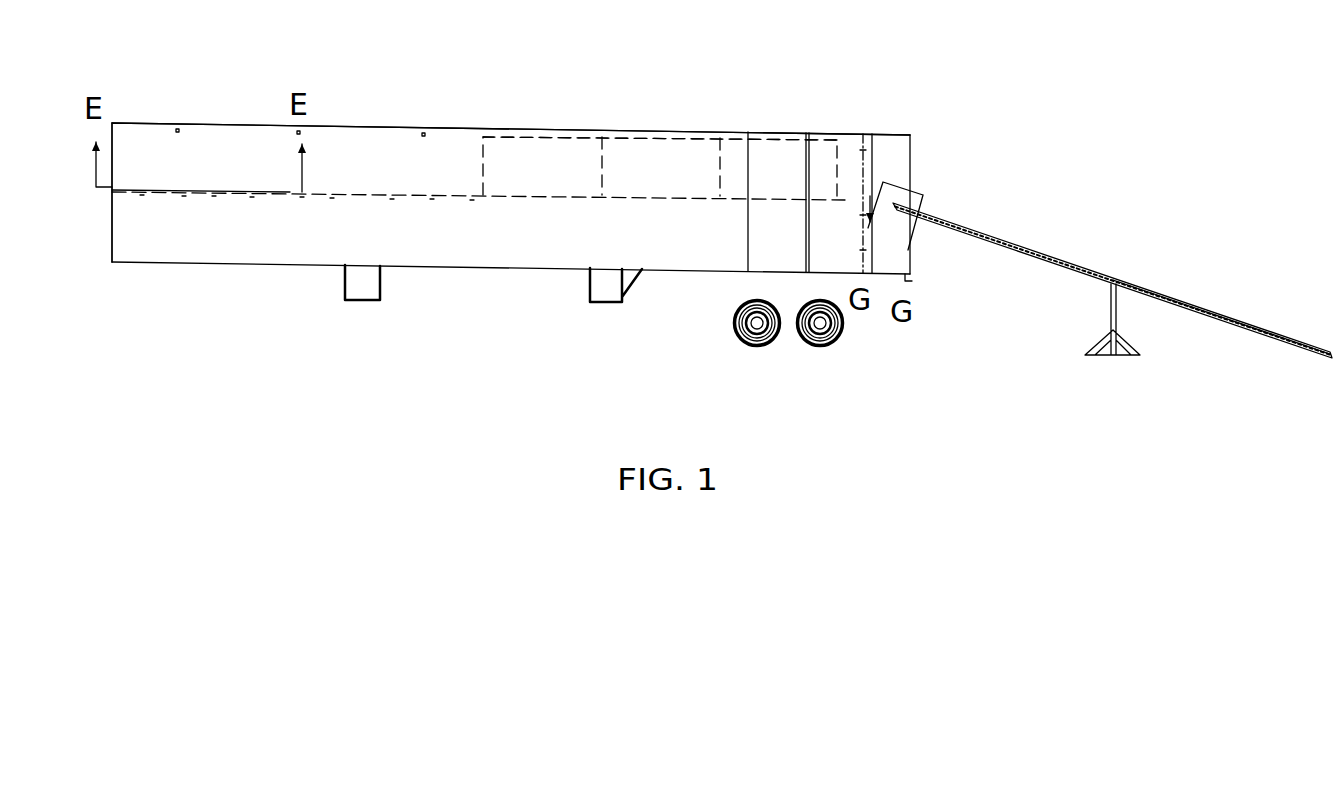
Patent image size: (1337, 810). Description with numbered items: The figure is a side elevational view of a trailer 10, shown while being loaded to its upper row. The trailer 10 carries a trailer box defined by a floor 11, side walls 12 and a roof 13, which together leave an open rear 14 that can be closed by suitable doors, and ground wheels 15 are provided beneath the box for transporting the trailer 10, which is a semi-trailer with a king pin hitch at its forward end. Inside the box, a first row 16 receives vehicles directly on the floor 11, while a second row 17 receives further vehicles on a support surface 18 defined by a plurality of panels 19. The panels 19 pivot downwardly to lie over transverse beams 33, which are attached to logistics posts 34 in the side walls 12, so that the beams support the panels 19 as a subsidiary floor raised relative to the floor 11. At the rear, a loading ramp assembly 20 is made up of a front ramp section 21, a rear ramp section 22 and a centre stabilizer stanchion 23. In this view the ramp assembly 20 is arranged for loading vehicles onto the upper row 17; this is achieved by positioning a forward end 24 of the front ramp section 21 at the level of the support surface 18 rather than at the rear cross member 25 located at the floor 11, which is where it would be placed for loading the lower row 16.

The trailer 10 is at (681, 110).
The floor 11 is at (453, 270).
The side walls 12 is at (435, 140).
The roof 13 is at (383, 125).
The open rear 14 is at (915, 256).
The ground wheels 15 is at (842, 326).
The first row 16 is at (292, 237).
The second row 17 is at (237, 163).
The support surface 18 is at (503, 193).
The panels 19 is at (578, 145).
The loading ramp assembly 20 is at (1112, 284).
The front ramp section 21 is at (993, 228).
The rear ramp section 22 is at (1193, 307).
The centre stabilizer stanchion 23 is at (1120, 315).
The forward end 24 is at (903, 193).
The rear cross member 25 is at (908, 280).
The transverse beams 33 is at (637, 200).
The logistics posts 34 is at (733, 272).